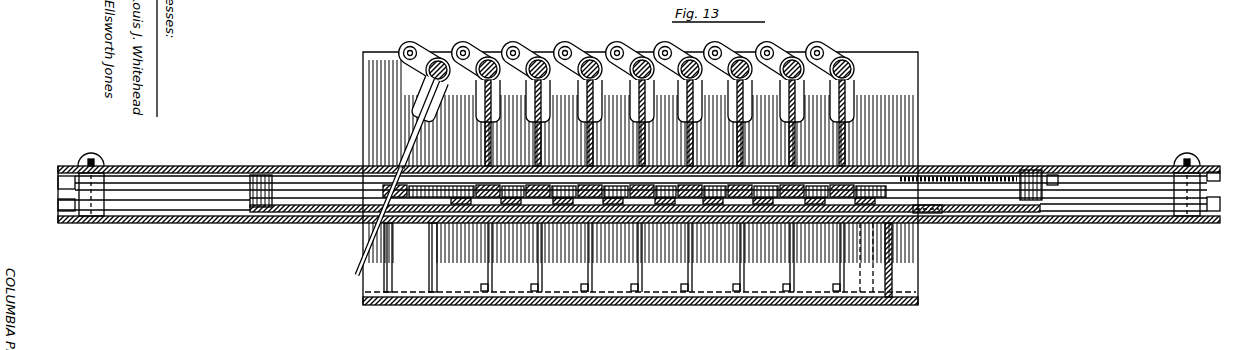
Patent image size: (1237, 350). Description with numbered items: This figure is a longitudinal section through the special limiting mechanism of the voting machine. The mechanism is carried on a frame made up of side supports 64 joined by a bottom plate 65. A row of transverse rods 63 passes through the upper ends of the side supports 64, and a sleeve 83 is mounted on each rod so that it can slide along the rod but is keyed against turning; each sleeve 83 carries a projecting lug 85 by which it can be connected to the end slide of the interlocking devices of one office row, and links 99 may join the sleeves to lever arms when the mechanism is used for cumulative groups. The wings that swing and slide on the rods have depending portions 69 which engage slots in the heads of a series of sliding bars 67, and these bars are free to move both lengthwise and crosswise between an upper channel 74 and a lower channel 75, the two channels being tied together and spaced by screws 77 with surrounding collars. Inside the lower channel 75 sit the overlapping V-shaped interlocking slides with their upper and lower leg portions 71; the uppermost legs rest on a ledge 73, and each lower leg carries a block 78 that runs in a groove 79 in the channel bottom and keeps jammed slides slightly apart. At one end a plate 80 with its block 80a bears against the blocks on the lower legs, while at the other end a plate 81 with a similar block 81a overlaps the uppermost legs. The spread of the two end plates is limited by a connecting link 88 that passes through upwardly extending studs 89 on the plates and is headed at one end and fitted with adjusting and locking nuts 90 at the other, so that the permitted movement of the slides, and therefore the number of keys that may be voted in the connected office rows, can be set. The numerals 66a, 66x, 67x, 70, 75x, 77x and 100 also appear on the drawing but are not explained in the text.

The transverse rods 63 is at (520, 48).
The side supports 64 is at (905, 98).
The bottom plate 65 is at (811, 304).
The guide sleeve 66a is at (483, 149).
The push rod 66x is at (536, 98).
The sliding bars 67 is at (580, 172).
The slide block 67x is at (722, 172).
The depending portions 69 is at (359, 272).
The rod 70 is at (358, 270).
The leg portions 71 is at (570, 224).
The ledge 73 is at (1156, 224).
The channel 74 is at (1115, 166).
The channel 75 is at (1124, 212).
The bar 75x is at (1060, 212).
The screws 77 is at (108, 155).
The end lug 77x is at (120, 178).
The block 78 is at (616, 224).
The groove 79 is at (1034, 222).
The plate 80 is at (306, 223).
The block 80a is at (470, 224).
The plate 81 is at (976, 176).
The block 81a is at (938, 214).
The sleeve 83 is at (632, 50).
The projecting lug 85 is at (437, 57).
The connecting link 88 is at (325, 183).
The studs 89 is at (264, 176).
The adjusting and locking nuts 90 is at (1055, 174).
The links 99 is at (405, 50).
The stud 100 is at (412, 47).